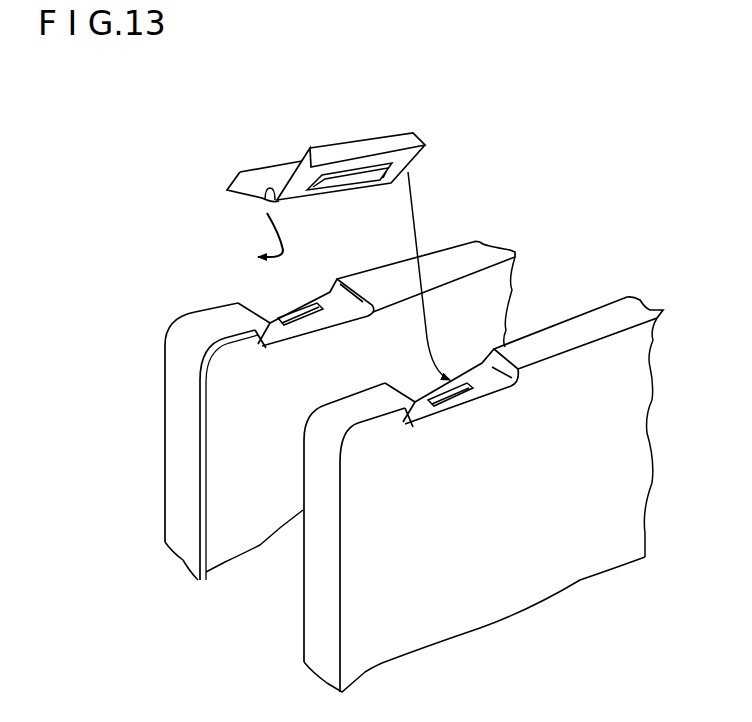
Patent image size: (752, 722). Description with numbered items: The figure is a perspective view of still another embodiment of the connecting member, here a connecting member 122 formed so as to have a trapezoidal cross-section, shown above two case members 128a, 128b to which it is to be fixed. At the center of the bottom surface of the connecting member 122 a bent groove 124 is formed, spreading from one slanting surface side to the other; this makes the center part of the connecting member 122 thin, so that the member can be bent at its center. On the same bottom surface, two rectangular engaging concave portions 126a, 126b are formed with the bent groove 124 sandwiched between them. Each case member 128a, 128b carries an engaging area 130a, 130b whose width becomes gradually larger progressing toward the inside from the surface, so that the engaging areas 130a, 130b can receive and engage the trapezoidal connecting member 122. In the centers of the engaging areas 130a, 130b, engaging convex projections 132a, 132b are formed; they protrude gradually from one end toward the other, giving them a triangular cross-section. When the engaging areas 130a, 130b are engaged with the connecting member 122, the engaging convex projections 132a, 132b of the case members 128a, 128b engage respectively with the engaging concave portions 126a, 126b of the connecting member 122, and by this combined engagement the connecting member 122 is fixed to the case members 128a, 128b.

The connecting member 122 is at (319, 238).
The bent groove 124 is at (274, 205).
The engaging concave portion 126a is at (352, 177).
The engaging concave portion 126b is at (240, 203).
The case member 128a is at (436, 494).
The case member 128b is at (287, 410).
The engaging area 130a is at (408, 382).
The engaging area 130b is at (263, 300).
The engaging convex projection 132a is at (458, 378).
The engaging convex projection 132b is at (308, 308).